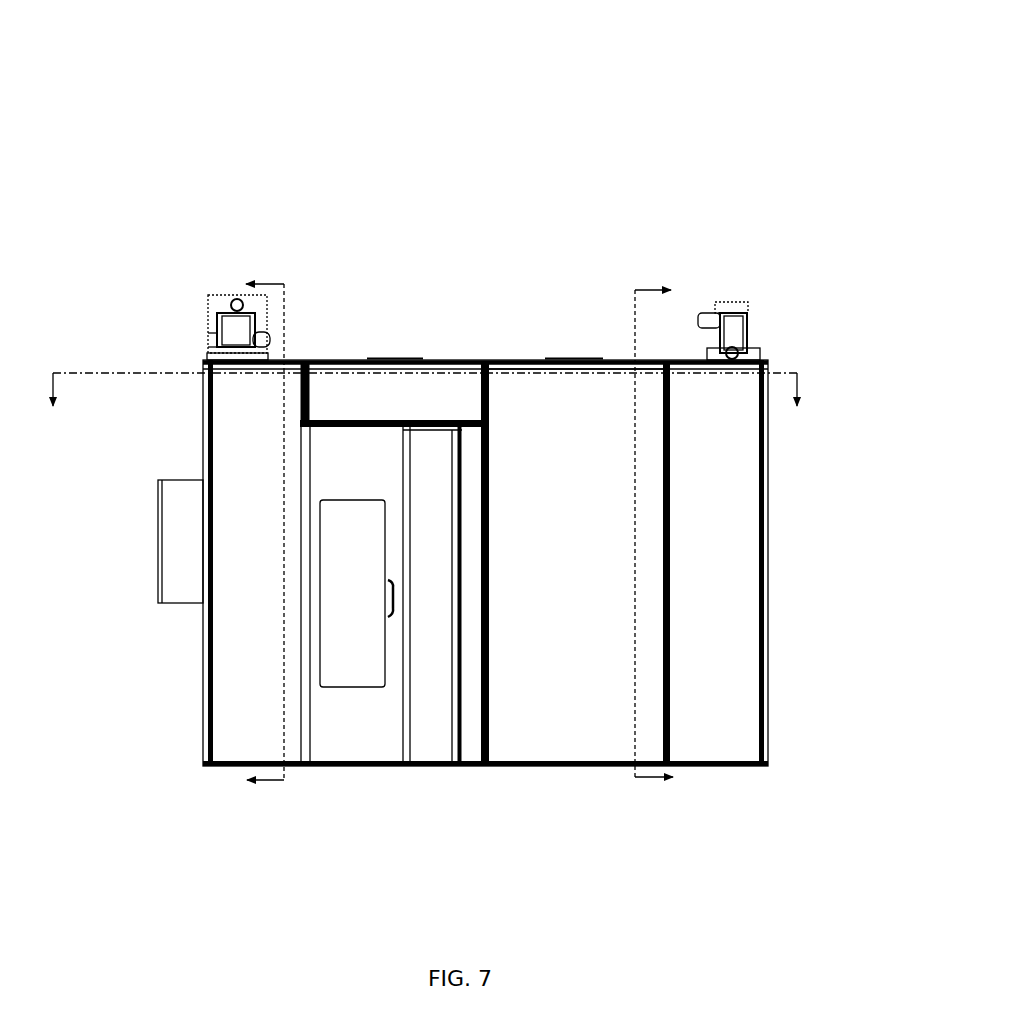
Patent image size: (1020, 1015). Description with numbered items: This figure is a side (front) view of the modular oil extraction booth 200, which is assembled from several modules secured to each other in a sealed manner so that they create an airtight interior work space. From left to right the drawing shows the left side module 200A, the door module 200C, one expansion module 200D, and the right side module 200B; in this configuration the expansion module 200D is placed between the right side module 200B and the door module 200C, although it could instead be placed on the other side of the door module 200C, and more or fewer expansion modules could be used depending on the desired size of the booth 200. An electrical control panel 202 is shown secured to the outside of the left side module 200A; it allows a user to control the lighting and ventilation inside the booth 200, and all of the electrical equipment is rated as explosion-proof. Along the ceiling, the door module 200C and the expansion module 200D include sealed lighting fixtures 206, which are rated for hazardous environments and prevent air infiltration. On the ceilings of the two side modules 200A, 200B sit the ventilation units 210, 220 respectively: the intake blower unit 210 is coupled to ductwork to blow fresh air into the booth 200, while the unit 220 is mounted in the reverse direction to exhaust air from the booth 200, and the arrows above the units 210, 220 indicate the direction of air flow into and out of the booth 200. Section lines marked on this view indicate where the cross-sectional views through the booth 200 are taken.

The oil extraction booth 200 is at (630, 122).
The left side module 200A is at (208, 715).
The right side module 200B is at (733, 763).
The door module 200C is at (343, 767).
The expansion module 200D is at (565, 766).
The electrical control panel 202 is at (163, 535).
The lighting fixtures 206 is at (395, 361).
The ventilation unit 210 is at (217, 322).
The ventilation unit 220 is at (742, 313).